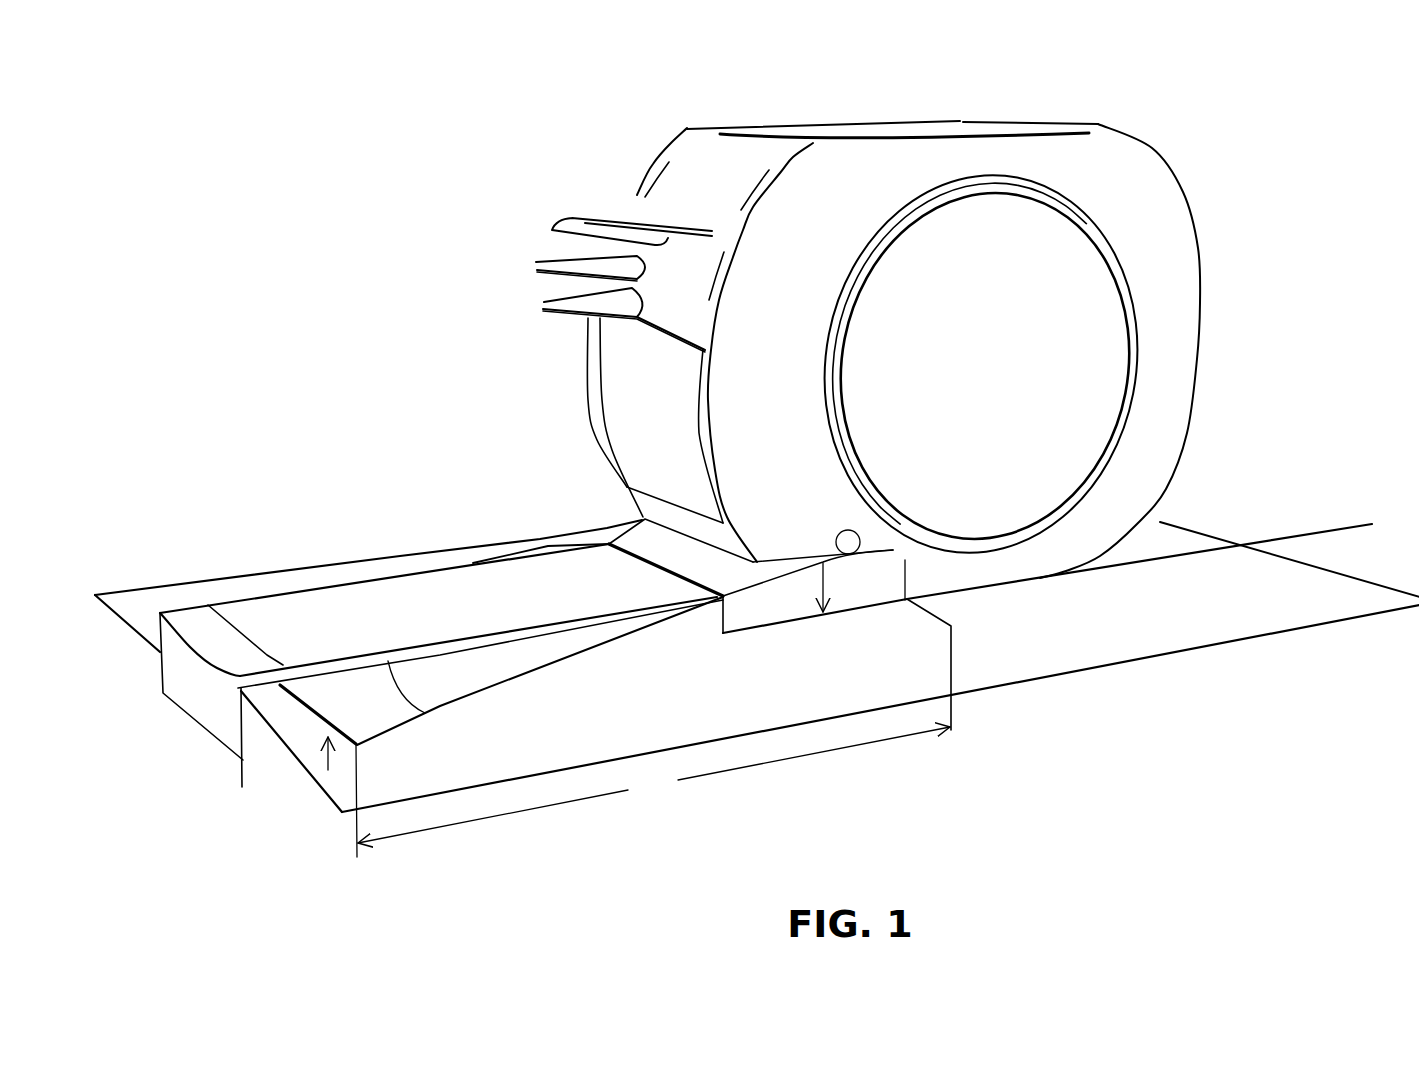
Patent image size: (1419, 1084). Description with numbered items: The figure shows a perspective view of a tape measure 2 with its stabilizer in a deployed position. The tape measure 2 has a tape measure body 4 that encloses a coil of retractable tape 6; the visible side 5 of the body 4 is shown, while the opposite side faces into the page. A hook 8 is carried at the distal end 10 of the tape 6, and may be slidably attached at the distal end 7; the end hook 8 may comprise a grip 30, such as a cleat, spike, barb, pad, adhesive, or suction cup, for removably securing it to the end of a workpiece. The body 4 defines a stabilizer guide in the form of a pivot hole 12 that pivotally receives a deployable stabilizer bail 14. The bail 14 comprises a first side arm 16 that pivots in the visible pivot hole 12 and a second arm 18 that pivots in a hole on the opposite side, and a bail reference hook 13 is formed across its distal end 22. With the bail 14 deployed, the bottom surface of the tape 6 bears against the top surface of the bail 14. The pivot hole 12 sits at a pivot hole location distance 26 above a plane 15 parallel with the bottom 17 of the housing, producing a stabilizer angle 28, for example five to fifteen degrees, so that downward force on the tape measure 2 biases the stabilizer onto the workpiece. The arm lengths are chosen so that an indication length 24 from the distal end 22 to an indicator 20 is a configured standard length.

The tape measure 2 is at (1200, 137).
The tape measure body 4 is at (1190, 291).
The side 5 is at (1170, 374).
The retractable tape 6 is at (372, 586).
The distal end of tape 7 is at (265, 636).
The hook 8 is at (242, 705).
The distal end 10 is at (173, 743).
The pivot hole 12 is at (848, 530).
The bail reference hook 13 is at (358, 748).
The deployable stabilizer bail 14 is at (395, 728).
The plane 15 is at (1311, 513).
The first side arm 16 is at (547, 664).
The bottom of housing 17 is at (799, 636).
The second arm 18 is at (607, 527).
The indicator 20 is at (905, 571).
The distal end of bail 22 is at (327, 764).
The indication length 24 is at (653, 792).
The pivot hole location distance 26 is at (823, 578).
The stabilizer angle 28 is at (405, 702).
The grip 30 is at (242, 787).